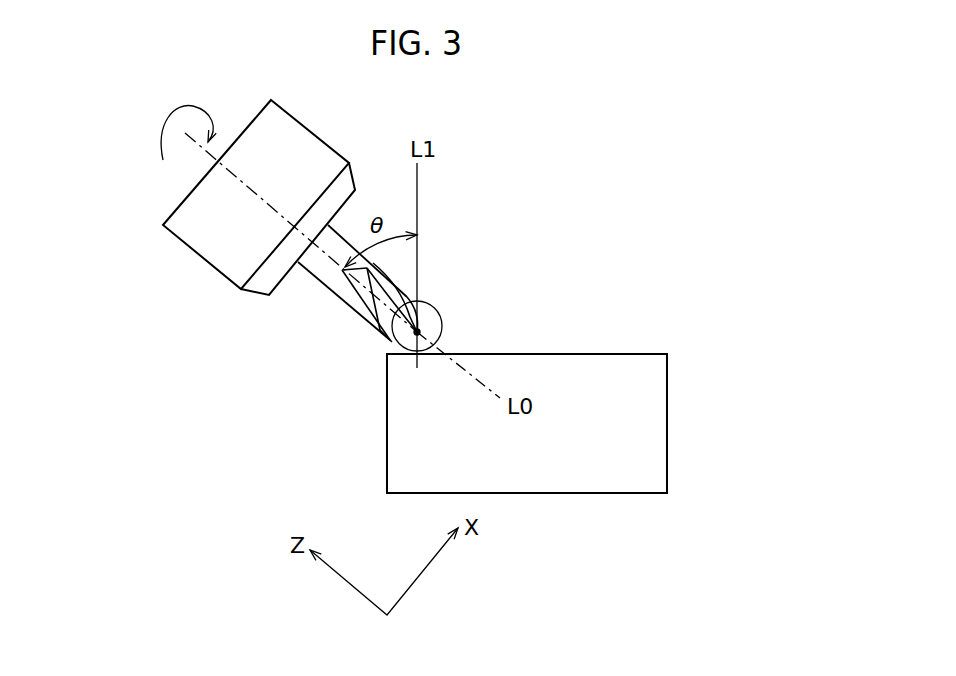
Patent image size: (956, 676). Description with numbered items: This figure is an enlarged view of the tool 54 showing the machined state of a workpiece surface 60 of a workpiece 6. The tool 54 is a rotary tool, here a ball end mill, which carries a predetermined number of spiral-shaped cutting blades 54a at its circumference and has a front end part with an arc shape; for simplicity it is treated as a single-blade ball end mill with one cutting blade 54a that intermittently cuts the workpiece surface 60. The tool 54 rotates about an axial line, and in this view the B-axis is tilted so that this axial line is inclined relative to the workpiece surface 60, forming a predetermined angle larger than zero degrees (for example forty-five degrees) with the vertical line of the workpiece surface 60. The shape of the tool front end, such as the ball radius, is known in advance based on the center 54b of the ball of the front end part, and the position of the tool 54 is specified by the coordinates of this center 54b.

The tool 54 is at (315, 295).
The cutting blade 54a is at (372, 312).
The center of the ball 54b is at (435, 310).
The workpiece 6 is at (672, 392).
The workpiece surface 60 is at (607, 353).